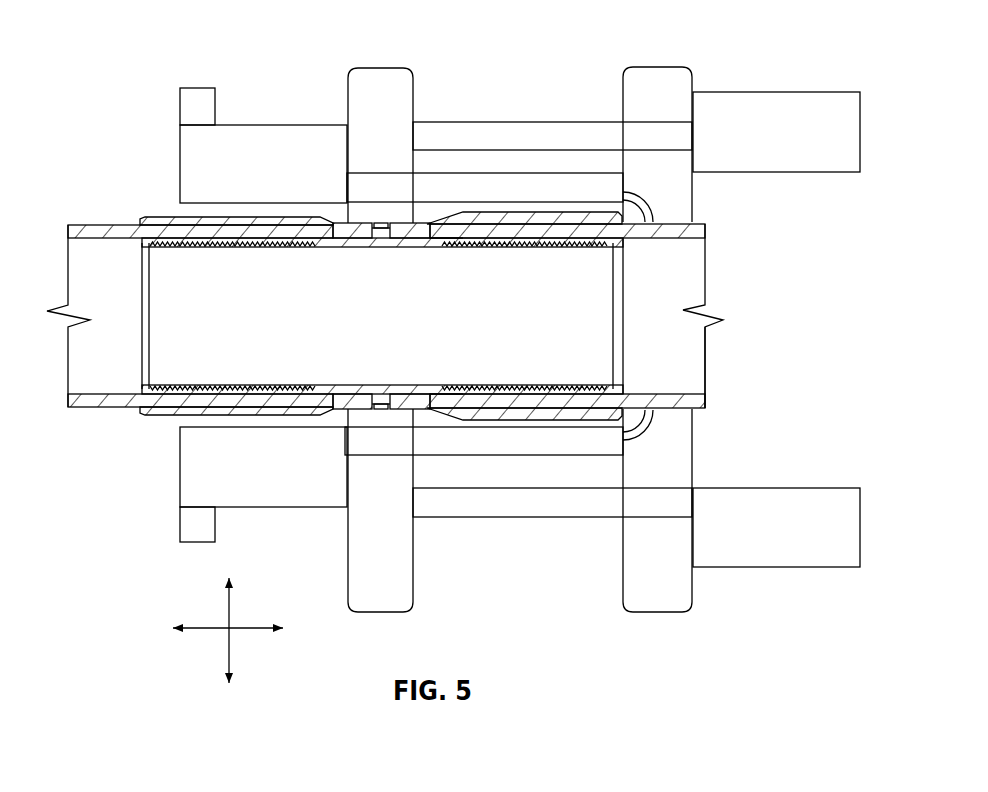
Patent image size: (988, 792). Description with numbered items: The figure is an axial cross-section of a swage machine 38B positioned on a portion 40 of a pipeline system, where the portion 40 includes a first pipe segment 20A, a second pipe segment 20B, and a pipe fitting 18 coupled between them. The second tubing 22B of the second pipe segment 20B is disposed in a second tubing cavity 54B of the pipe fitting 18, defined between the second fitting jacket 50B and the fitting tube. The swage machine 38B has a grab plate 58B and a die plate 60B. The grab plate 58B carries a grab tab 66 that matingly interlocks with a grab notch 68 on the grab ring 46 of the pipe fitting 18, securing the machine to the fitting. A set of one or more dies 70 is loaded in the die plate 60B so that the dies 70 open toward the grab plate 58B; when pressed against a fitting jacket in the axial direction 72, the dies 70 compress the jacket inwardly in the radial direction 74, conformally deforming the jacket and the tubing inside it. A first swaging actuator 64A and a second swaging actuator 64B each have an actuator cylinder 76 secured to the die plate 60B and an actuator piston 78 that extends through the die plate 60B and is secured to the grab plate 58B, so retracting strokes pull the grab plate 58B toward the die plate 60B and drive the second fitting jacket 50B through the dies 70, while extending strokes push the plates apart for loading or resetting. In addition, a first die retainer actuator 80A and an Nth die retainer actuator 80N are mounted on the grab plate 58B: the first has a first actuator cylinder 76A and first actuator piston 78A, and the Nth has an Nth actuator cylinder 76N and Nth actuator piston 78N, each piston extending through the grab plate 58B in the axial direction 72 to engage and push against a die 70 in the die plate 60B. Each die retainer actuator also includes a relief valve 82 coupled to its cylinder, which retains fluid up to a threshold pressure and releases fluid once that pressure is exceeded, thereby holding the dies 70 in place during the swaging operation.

The pipe fitting 18 is at (173, 212).
The first pipe segment 20A is at (118, 217).
The second pipe segment 20B is at (715, 280).
The second tubing 22B is at (707, 360).
The swage machine 38B is at (533, 52).
The portion of pipeline system 40 is at (115, 160).
The grab ring 46 is at (427, 247).
The second fitting jacket 50B is at (560, 243).
The second tubing cavity 54B is at (456, 233).
The grab plate 58B is at (372, 68).
The die plate 60B is at (642, 68).
The first swaging actuator 64A is at (768, 78).
The second swaging actuator 64B is at (797, 480).
The grab tab 66 is at (407, 248).
The grab notch 68 is at (368, 245).
The die 70 is at (655, 212).
The axial direction 72 is at (253, 620).
The radial direction 74 is at (228, 600).
The actuator cylinder 76 is at (808, 172).
The first actuator cylinder 76A is at (287, 125).
The Nth actuator cylinder 76N is at (333, 507).
The actuator piston 78 is at (568, 122).
The first actuator piston 78A is at (422, 173).
The Nth actuator piston 78N is at (502, 457).
The first die retainer actuator 80A is at (143, 73).
The Nth die retainer actuator 80N is at (150, 482).
The relief valve 82 is at (180, 112).